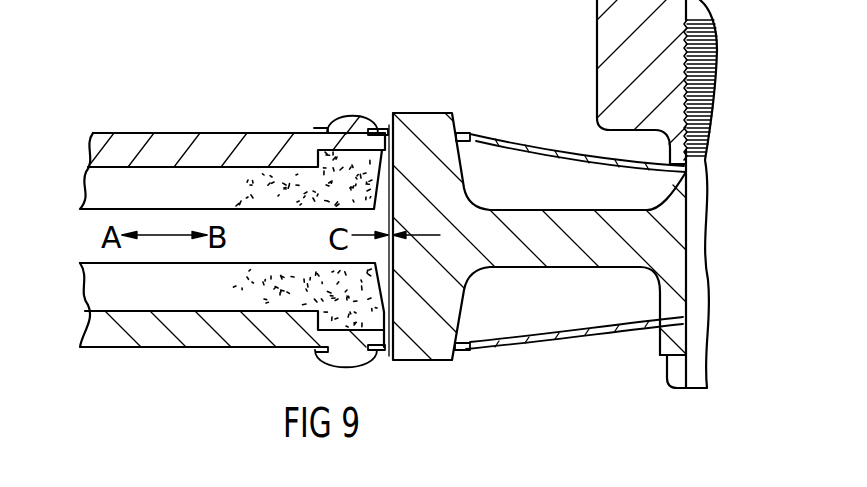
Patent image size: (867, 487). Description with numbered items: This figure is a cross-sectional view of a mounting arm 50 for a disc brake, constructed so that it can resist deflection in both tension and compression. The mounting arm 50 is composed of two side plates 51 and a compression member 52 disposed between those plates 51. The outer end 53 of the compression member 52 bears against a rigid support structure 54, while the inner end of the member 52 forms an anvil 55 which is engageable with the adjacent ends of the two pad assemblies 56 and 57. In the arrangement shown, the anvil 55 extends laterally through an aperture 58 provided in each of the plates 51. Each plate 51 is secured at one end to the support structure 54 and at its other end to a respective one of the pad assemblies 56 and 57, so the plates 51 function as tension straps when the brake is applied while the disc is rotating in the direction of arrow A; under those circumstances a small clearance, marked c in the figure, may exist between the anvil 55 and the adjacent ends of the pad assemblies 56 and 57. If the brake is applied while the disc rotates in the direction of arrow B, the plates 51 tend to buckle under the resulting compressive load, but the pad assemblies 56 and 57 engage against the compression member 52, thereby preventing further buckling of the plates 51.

The mounting arm 50 is at (514, 362).
The side plate 51 is at (540, 145).
The compression member 52 is at (562, 290).
The outer end 53 is at (668, 265).
The support structure 54 is at (692, 318).
The anvil 55 is at (417, 333).
The pad assembly 56 is at (194, 337).
The pad assembly 57 is at (166, 147).
The aperture 58 is at (460, 130).